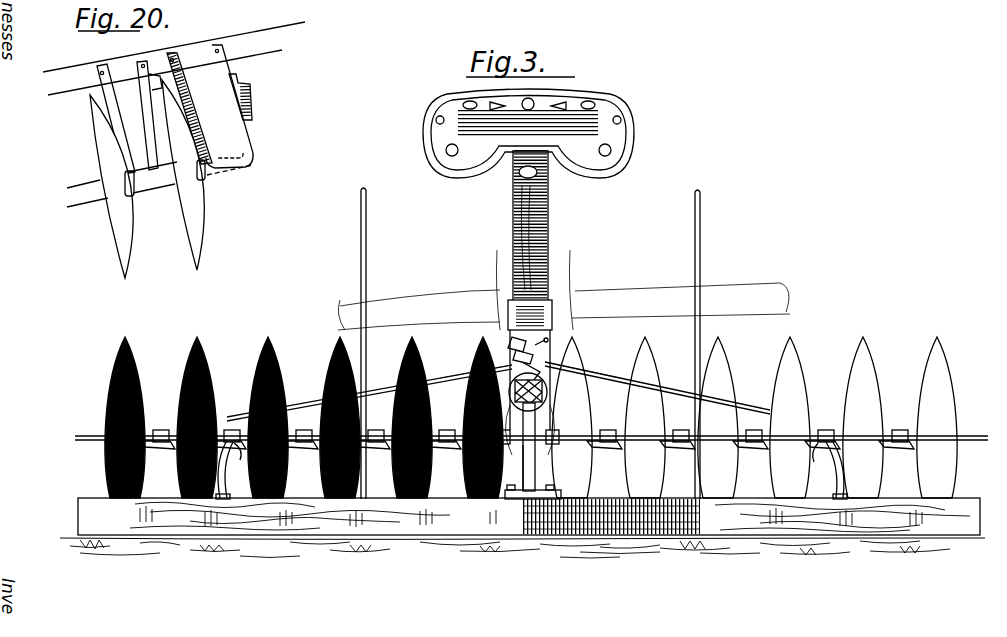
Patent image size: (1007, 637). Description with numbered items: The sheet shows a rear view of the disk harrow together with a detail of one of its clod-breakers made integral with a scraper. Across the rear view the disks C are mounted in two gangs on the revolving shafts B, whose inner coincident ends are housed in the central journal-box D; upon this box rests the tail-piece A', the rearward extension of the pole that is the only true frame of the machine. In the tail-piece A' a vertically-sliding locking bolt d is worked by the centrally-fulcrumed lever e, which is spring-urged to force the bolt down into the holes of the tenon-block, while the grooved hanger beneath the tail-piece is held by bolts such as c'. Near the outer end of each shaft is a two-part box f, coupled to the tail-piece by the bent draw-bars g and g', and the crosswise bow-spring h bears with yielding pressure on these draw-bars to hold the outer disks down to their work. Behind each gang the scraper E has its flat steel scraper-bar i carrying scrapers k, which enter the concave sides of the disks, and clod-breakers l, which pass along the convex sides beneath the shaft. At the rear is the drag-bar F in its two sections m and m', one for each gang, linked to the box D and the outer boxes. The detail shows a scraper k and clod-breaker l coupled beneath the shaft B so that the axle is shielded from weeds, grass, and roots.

In FIG. 20, the disks C is at (147, 179).
In FIG. 3, the disks C is at (531, 417).
In FIG. 20, the revolving shafts B is at (143, 188).
In FIG. 3, the revolving shafts B is at (150, 432).
In FIG. 20, the scraper E is at (258, 30).
In FIG. 3, the scraper E is at (90, 427).
In FIG. 3, the drag-bar F is at (92, 494).
In FIG. 3, the bent draw-bar g' is at (369, 393).
In FIG. 3, the bent draw-bar g is at (657, 389).
In FIG. 3, the bow-spring h is at (456, 379).
In FIG. 3, the locking bolt d is at (514, 340).
In FIG. 3, the bolt c' is at (519, 366).
In FIG. 3, the lever e is at (547, 342).
In FIG. 3, the tail-piece A' is at (550, 365).
In FIG. 3, the journal-box D is at (529, 436).
In FIG. 3, the two-part box f is at (236, 454).
In FIG. 3, the drag-bar section m' is at (313, 516).
In FIG. 3, the drag-bar section m is at (842, 518).
In FIG. 20, the scraper-bar i is at (173, 56).
In FIG. 20, the scraper k is at (159, 96).
In FIG. 20, the clod-breaker l is at (175, 110).